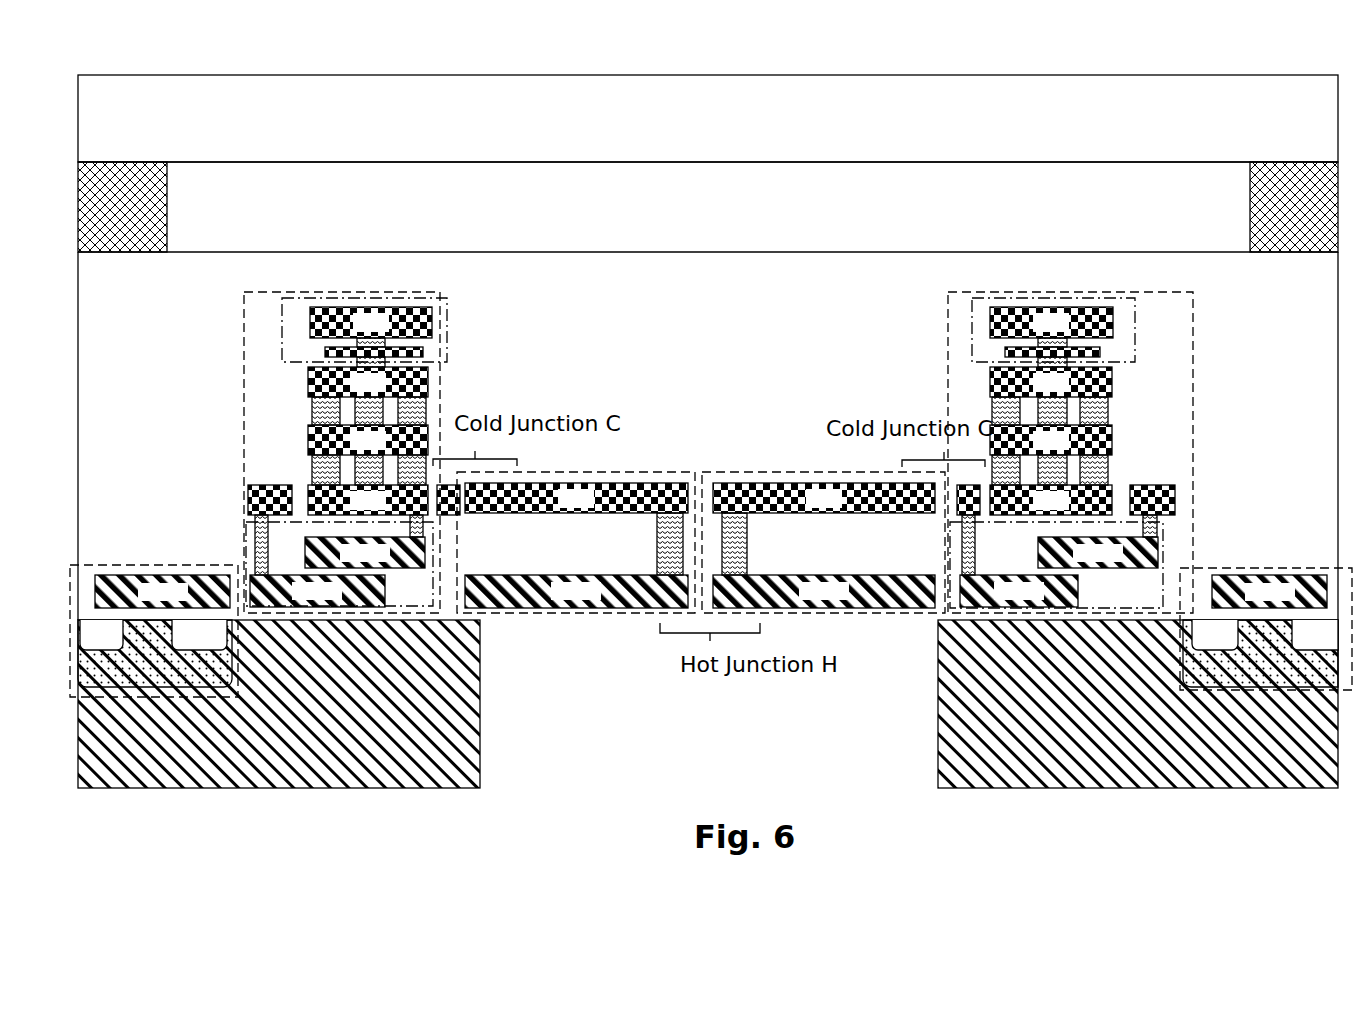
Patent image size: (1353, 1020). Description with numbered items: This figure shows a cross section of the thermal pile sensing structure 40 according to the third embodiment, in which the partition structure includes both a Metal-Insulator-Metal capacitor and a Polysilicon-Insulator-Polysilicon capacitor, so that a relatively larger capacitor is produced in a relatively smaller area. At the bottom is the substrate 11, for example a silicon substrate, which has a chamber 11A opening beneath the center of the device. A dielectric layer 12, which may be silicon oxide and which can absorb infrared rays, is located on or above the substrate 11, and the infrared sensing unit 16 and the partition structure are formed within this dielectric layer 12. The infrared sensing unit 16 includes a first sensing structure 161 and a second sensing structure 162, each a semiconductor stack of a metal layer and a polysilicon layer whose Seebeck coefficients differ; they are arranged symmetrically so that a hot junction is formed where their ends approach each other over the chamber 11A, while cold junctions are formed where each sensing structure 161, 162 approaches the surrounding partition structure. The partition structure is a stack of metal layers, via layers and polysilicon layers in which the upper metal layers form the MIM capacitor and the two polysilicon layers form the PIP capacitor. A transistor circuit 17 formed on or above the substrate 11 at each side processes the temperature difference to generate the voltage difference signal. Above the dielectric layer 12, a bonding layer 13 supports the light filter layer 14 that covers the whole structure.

The thermal pile sensing structure 40 is at (1145, 66).
The light filter layer 14 is at (708, 118).
The bonding layer 13 is at (708, 207).
The dielectric layer 12 is at (708, 391).
The substrate 11 is at (708, 704).
The chamber 11A is at (733, 733).
The transistor circuit 17 is at (100, 556).
The infrared sensing unit 16 is at (691, 499).
The first sensing structure 161 is at (600, 472).
The second sensing structure 162 is at (805, 472).